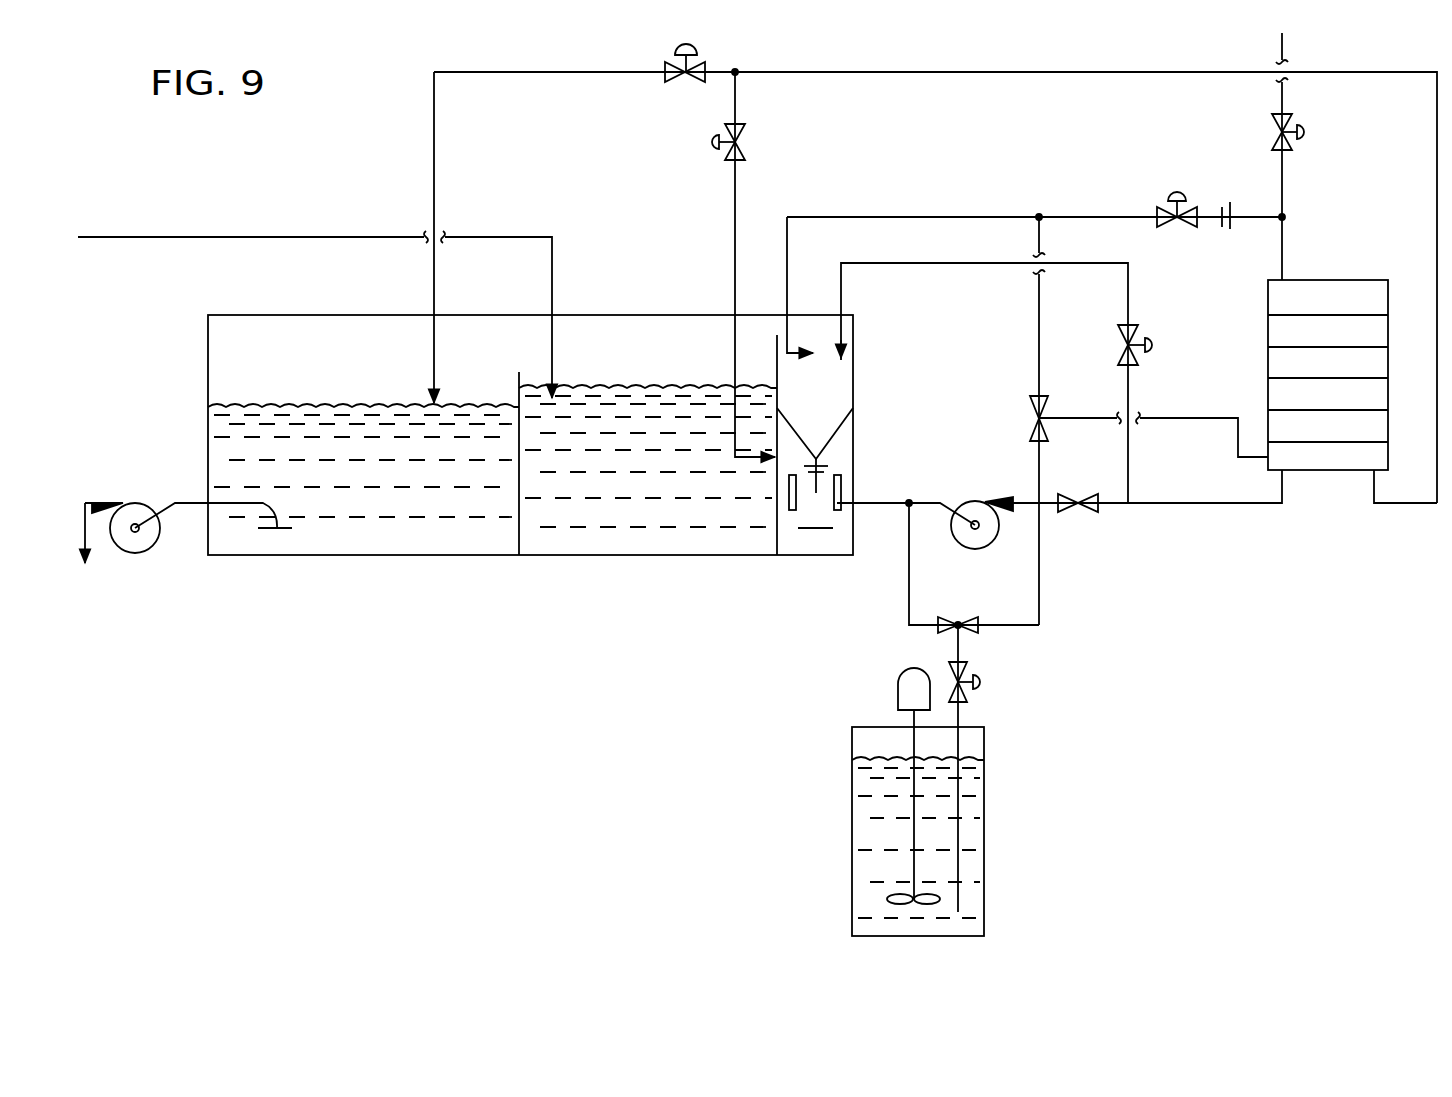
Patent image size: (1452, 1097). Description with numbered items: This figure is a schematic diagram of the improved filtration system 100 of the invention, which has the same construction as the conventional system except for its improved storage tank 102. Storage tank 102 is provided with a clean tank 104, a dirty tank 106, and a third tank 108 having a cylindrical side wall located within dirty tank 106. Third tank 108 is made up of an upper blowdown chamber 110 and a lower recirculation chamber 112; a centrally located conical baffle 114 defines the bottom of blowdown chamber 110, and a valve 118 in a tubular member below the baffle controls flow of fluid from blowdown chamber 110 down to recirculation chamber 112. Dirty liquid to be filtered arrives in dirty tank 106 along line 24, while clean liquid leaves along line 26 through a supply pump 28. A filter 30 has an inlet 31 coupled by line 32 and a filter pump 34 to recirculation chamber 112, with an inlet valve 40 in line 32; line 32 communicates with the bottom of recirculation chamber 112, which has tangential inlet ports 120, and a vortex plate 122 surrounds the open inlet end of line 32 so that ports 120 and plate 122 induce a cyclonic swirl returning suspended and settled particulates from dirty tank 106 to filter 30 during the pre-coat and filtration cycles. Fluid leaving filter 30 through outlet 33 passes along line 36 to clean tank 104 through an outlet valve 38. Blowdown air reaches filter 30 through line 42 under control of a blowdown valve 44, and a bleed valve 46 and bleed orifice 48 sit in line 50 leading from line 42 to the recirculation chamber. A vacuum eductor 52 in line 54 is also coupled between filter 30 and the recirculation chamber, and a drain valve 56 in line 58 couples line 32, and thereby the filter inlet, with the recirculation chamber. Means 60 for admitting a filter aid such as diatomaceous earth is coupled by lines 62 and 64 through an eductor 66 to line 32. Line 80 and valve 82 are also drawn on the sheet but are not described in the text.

The line 24 is at (552, 280).
The line 26 is at (246, 503).
The supply pump 28 is at (158, 546).
The filter 30 is at (1315, 278).
The inlet 31 is at (1290, 472).
The line 32 is at (907, 504).
The outlet 33 is at (1372, 472).
The filter pump 34 is at (986, 541).
The line 36 is at (434, 192).
The outlet valve 38 is at (682, 80).
The inlet valve 40 is at (1081, 513).
The line 42 is at (1282, 196).
The blowdown valve 44 is at (1270, 133).
The bleed valve 46 is at (1177, 229).
The bleed orifice 48 is at (1224, 230).
The line 50 is at (931, 217).
The vacuum eductor 52 is at (1034, 418).
The line 54 is at (1037, 341).
The drain valve 56 is at (1118, 346).
The line 58 is at (984, 265).
The means for admitting a filter aid 60 is at (988, 804).
The line 62 is at (909, 606).
The line 64 is at (1064, 577).
The eductor 66 is at (960, 618).
The line 80 is at (735, 197).
The valve 82 is at (746, 142).
The system 100 is at (600, 570).
The storage tank 102 is at (555, 556).
The clean tank 104 is at (330, 367).
The dirty tank 106 is at (663, 367).
The third tank 108 is at (856, 382).
The blowdown chamber 110 is at (828, 380).
The recirculation chamber 112 is at (845, 474).
The conical baffle 114 is at (838, 428).
The valve 118 is at (805, 462).
The tangential inlet ports 120 is at (787, 504).
The vortex plate 122 is at (797, 530).